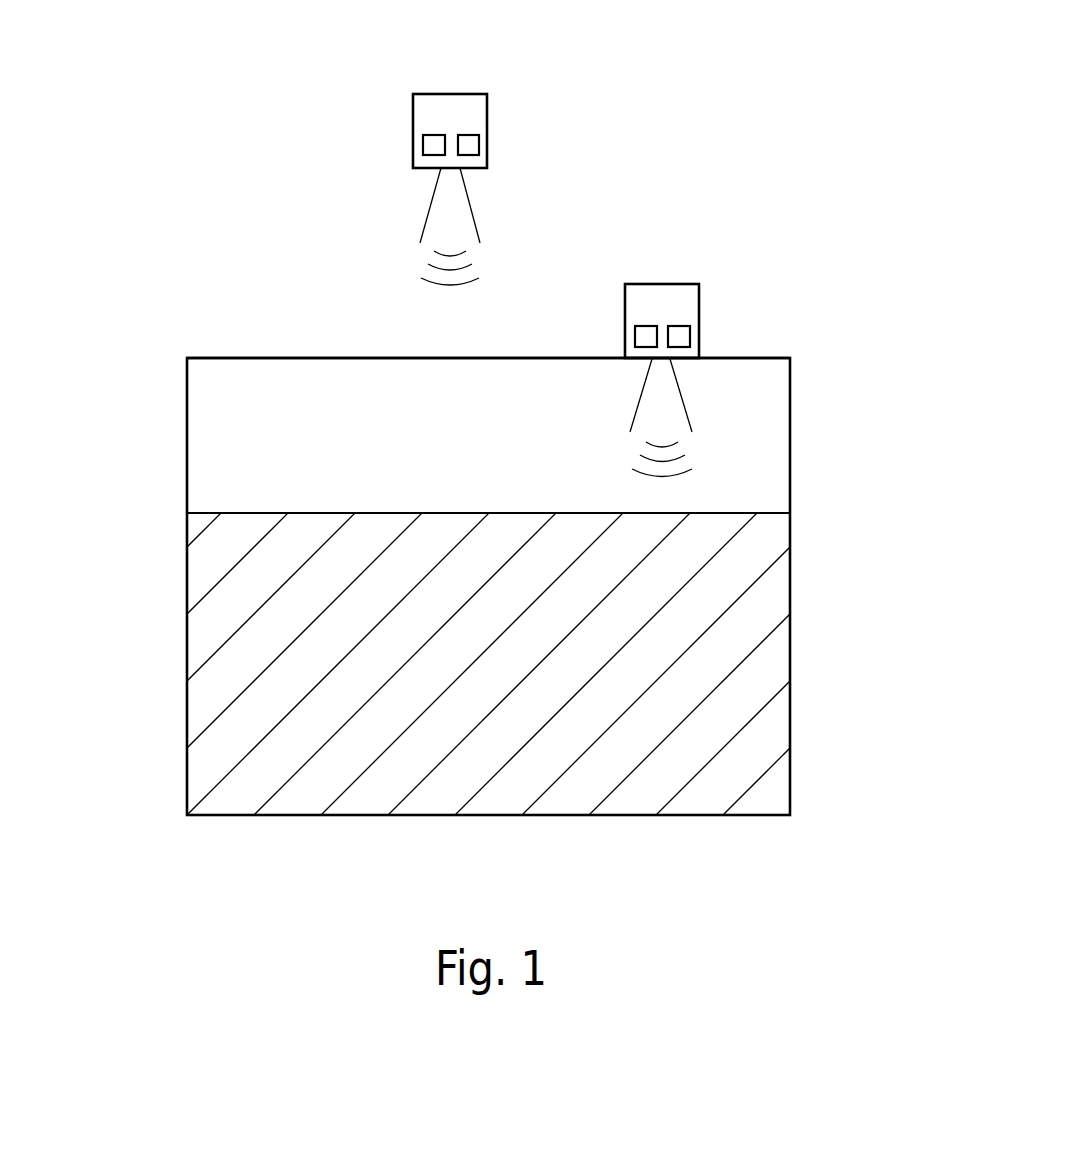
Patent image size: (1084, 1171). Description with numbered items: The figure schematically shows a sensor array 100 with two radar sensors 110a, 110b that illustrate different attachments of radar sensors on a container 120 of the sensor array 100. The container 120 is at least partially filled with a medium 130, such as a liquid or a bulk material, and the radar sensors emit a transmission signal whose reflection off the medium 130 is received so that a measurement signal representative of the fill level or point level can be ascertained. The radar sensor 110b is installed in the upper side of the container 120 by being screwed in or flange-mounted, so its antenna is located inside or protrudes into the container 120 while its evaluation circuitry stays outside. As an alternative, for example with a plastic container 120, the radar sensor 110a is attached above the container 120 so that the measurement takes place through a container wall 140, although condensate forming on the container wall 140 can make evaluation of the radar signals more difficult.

The sensor array 100 is at (757, 103).
The radar sensor 110a is at (450, 151).
The radar sensor 110b is at (707, 342).
The container 120 is at (800, 488).
The medium 130 is at (222, 662).
The container wall 140 is at (262, 346).